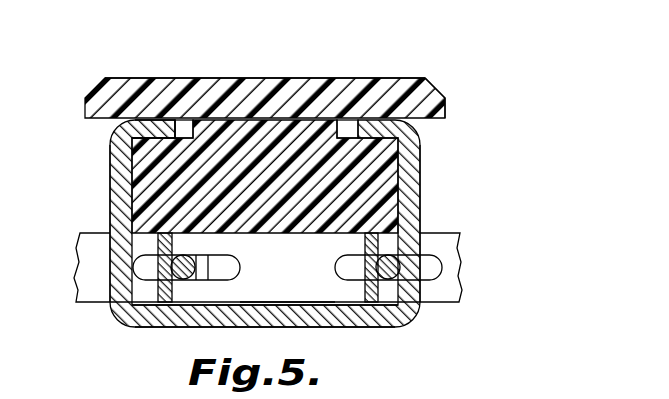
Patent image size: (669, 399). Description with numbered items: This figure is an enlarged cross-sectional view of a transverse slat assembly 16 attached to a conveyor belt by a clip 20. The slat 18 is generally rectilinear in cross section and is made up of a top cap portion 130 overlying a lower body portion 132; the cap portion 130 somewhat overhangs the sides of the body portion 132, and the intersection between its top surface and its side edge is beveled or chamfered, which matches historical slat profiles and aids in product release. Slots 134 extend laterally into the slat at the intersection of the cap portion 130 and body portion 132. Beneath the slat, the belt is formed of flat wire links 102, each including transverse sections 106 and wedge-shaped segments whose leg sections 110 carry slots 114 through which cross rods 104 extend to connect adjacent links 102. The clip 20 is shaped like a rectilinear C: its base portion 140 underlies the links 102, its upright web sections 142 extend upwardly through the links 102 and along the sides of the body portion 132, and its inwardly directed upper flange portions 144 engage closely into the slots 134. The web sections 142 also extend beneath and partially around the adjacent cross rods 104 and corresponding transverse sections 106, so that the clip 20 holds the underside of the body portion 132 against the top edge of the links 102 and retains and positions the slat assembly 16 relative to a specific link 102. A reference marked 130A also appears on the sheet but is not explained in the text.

The slat assembly 16 is at (470, 93).
The slat 18 is at (400, 70).
The clip 20 is at (104, 165).
The link 102 is at (455, 228).
The cross rod 104 is at (420, 248).
The transverse section 106 is at (163, 297).
The leg section 110 is at (313, 280).
The slot 114 is at (430, 268).
The cap portion 130 is at (268, 78).
The plate 130A is at (546, 386).
The body portion 132 is at (400, 152).
The slot 134 is at (183, 128).
The base portion 140 is at (207, 318).
The upright web section 142 is at (112, 205).
The upper flange portion 144 is at (152, 140).